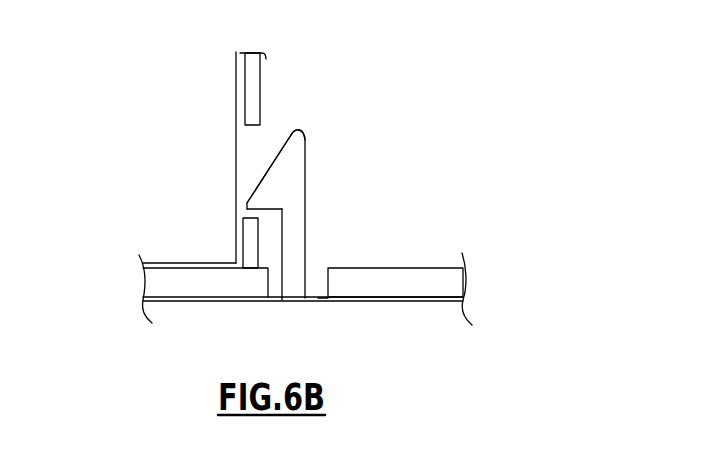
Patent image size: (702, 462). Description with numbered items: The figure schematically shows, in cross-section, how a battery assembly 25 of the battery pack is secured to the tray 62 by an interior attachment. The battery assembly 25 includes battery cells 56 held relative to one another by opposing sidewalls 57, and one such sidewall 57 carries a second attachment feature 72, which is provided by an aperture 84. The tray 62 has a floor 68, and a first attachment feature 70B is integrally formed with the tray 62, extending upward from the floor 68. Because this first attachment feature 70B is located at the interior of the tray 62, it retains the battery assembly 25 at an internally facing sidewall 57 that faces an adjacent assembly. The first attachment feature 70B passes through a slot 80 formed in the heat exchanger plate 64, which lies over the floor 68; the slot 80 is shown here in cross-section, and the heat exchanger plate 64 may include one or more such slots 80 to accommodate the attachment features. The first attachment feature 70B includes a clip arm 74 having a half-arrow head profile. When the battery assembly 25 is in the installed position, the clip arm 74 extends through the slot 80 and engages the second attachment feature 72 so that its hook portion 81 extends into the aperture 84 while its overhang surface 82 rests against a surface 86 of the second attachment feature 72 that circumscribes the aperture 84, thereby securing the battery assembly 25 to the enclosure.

The battery assembly 25 is at (143, 100).
The battery cell 56 is at (167, 184).
The sidewall 57 is at (252, 63).
The first attachment feature 70B is at (329, 162).
The second attachment feature 72 is at (236, 166).
The hook portion 81 is at (287, 162).
The overhang surface 82 is at (270, 208).
The clip arm 74 is at (290, 227).
The aperture 84 is at (252, 215).
The surface 86 is at (257, 216).
The slot 80 is at (320, 280).
The heat exchanger plate 64 is at (392, 273).
The floor 68 is at (323, 298).
The tray 62 is at (397, 301).